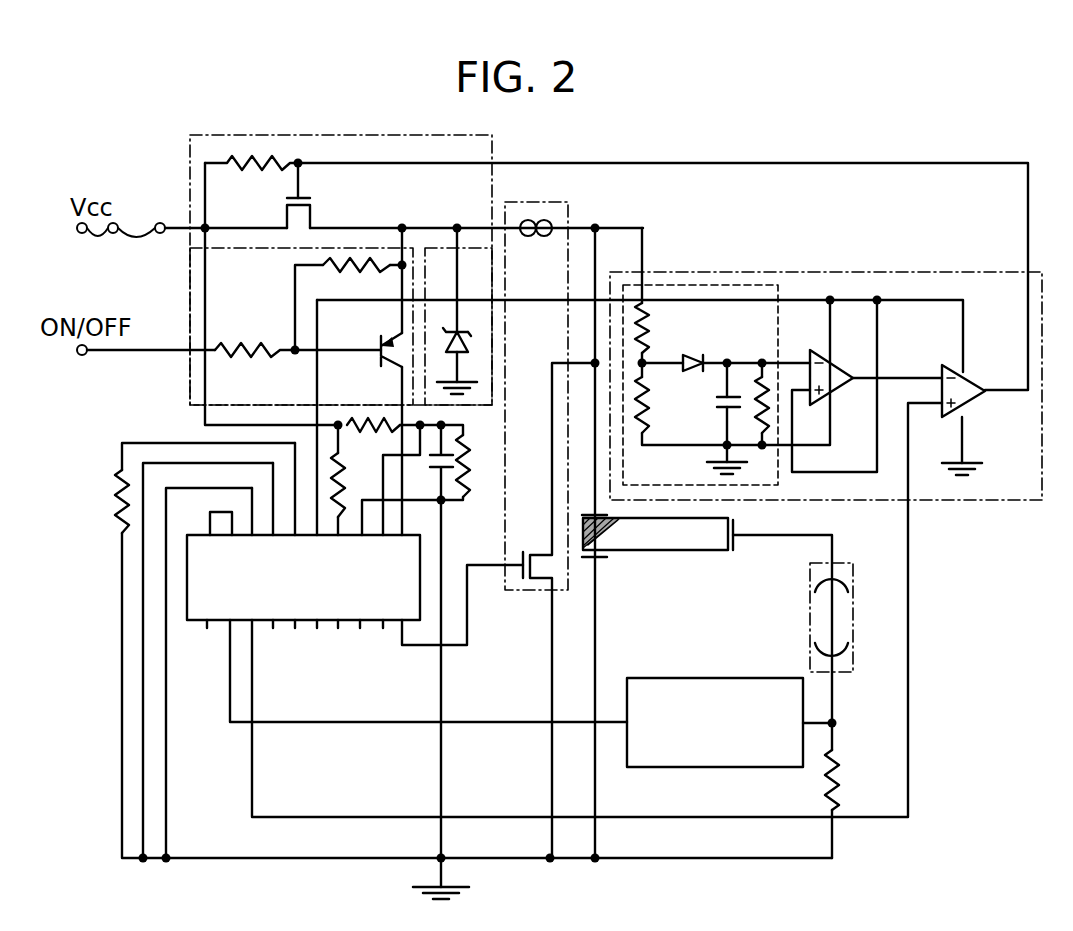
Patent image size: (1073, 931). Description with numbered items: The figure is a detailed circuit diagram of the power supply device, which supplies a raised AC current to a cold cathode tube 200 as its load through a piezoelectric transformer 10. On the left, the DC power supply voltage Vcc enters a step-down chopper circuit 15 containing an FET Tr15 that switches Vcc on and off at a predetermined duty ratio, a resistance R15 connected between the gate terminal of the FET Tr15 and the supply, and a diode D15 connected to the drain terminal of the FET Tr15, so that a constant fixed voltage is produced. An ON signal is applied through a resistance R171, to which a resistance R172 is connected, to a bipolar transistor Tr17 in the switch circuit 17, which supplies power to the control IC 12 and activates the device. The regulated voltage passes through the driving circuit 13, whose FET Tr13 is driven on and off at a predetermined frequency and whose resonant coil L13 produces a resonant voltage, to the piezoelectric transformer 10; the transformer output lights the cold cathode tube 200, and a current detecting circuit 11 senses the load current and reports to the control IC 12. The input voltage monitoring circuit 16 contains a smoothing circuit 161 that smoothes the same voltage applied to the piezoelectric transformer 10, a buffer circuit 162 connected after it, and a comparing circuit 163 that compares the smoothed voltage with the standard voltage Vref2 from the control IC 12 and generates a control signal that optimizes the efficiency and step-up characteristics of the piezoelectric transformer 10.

The piezoelectric transformer 10 is at (700, 553).
The current detecting circuit 11 is at (650, 778).
The control IC 12 is at (201, 628).
The driving circuit 13 is at (507, 424).
The step-down chopper circuit 15 is at (493, 146).
The input voltage monitoring circuit 16 is at (826, 400).
The switch circuit 17 is at (188, 283).
The smoothing circuit 161 is at (755, 285).
The buffer circuit 162 is at (835, 398).
The comparing circuit 163 is at (975, 403).
The cold cathode tube 200 is at (808, 618).
The resistance R15 is at (251, 176).
The FET Tr15 is at (328, 206).
The resistance R171 is at (298, 364).
The resistance R172 is at (356, 278).
The bipolar transistor Tr17 is at (369, 361).
The diode D15 is at (472, 346).
The resonant coil L13 is at (537, 242).
The FET Tr13 is at (521, 558).